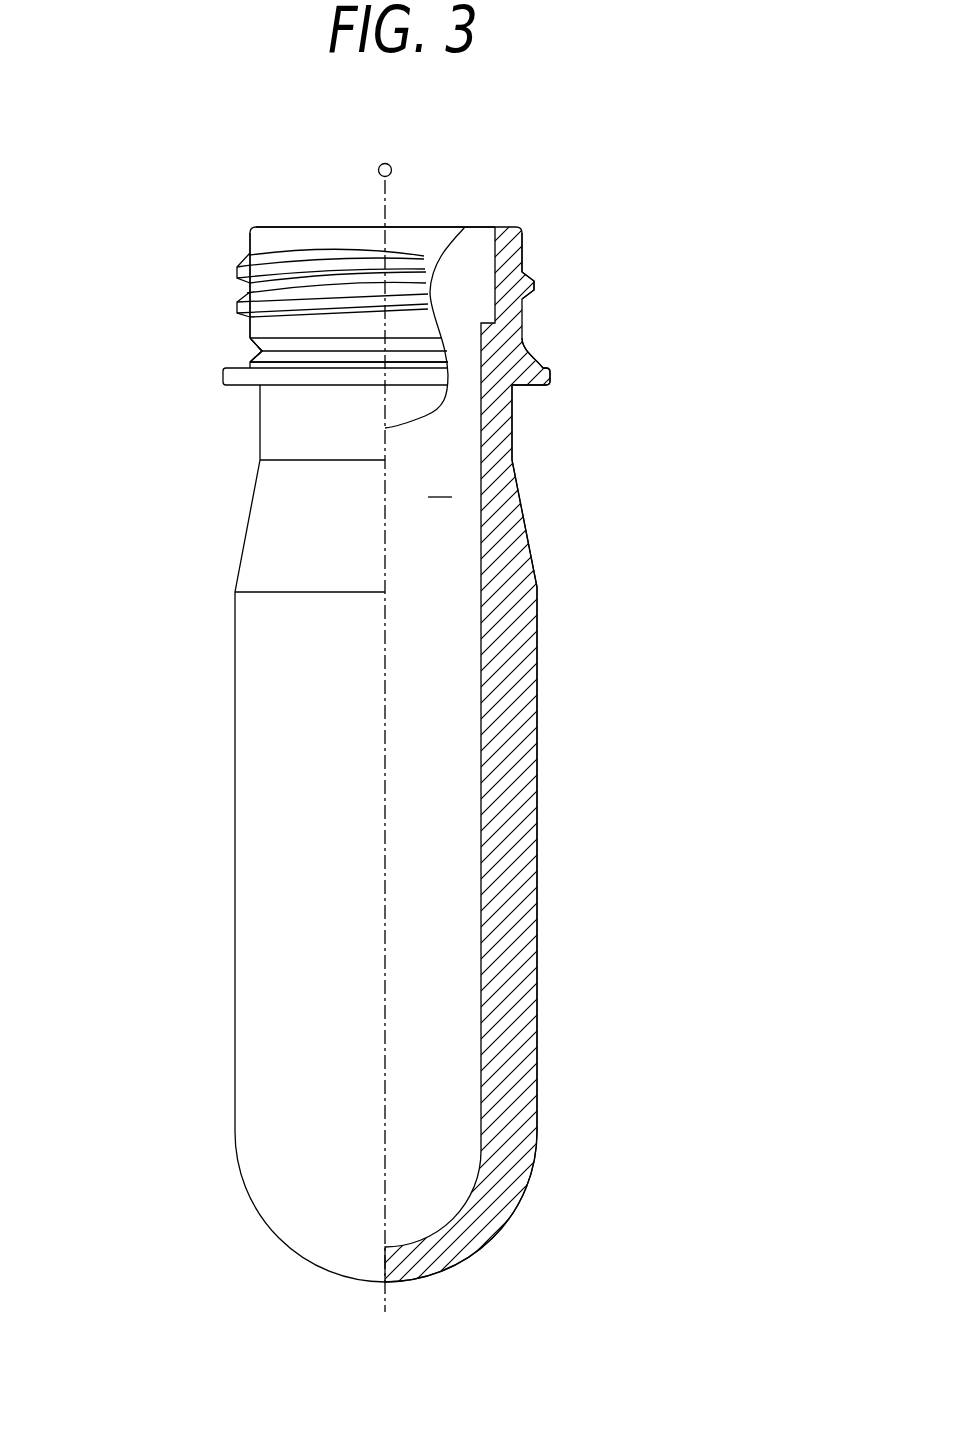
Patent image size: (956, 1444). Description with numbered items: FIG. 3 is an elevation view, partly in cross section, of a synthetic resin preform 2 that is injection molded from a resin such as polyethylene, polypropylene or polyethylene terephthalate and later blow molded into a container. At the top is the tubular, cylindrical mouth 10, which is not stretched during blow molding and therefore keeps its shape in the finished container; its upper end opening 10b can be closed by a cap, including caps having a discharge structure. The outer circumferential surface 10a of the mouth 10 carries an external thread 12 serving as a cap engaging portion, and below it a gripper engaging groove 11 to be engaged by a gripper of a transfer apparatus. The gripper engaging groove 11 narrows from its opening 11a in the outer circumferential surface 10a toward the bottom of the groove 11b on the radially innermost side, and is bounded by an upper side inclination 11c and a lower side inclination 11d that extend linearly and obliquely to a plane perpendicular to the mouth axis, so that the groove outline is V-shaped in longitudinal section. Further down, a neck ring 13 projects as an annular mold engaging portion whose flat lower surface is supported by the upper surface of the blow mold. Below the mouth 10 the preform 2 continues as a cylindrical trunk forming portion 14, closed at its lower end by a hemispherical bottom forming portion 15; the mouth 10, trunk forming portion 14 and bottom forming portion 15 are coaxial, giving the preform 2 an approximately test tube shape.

The synthetic resin preform 2 is at (627, 171).
The mouth 10 is at (243, 219).
The outer circumferential surface 10a is at (250, 240).
The upper end opening 10b is at (477, 227).
The gripper engaging groove 11 is at (242, 352).
The opening 11a is at (246, 338).
The bottom of the groove 11b is at (250, 352).
The upper side inclination 11c is at (261, 351).
The lower side inclination 11d is at (252, 360).
The external thread 12 is at (238, 265).
The neck ring 13 is at (223, 380).
The trunk forming portion 14 is at (540, 725).
The bottom forming portion 15 is at (497, 1240).